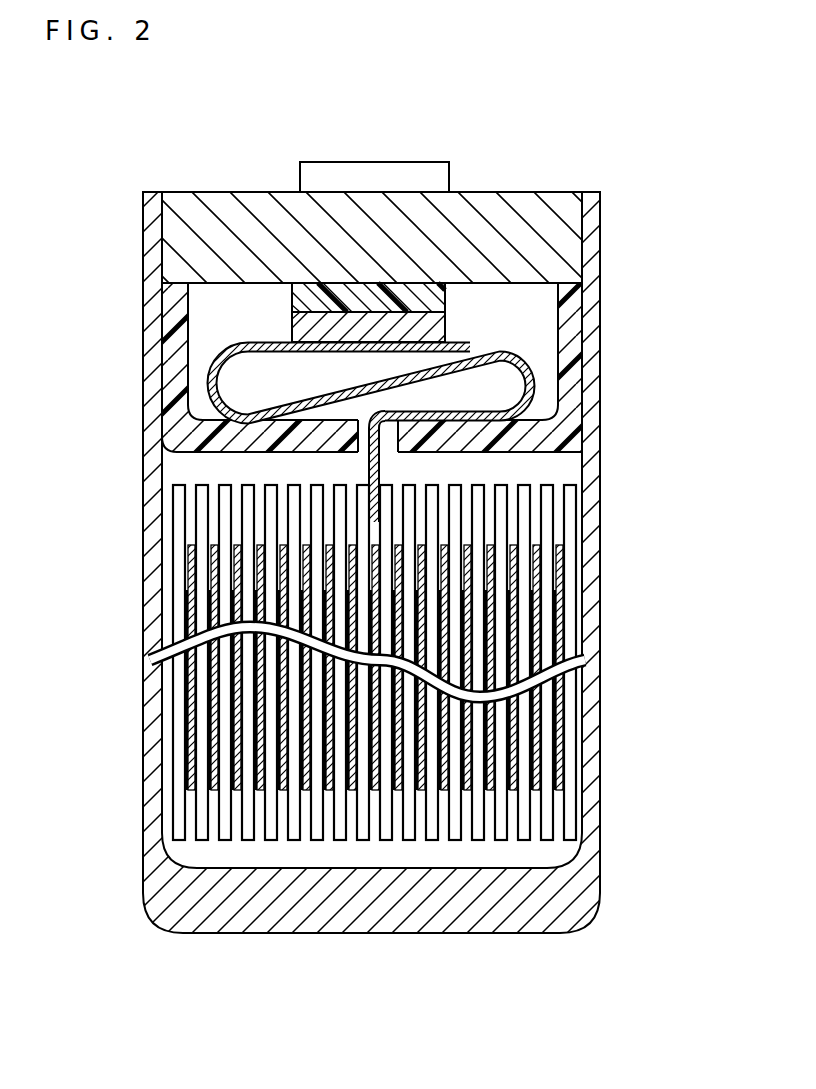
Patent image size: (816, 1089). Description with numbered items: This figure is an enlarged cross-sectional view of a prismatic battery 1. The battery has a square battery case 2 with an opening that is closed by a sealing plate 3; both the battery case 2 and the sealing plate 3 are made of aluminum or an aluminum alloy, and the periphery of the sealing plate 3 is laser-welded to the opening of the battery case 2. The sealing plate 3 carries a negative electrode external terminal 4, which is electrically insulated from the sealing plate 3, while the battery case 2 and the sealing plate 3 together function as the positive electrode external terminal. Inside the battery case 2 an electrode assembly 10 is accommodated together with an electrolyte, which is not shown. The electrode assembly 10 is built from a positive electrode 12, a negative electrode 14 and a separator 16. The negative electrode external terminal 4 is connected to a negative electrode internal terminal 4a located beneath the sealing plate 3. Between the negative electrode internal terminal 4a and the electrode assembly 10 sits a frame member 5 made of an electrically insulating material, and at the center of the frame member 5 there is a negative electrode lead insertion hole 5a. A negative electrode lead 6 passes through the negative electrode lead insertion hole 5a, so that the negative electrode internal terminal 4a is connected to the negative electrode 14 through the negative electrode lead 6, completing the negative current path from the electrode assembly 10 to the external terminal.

The prismatic battery 1 is at (571, 136).
The battery case 2 is at (150, 762).
The sealing plate 3 is at (216, 218).
The negative electrode external terminal 4 is at (383, 167).
The negative electrode internal terminal 4a is at (425, 330).
The frame member 5 is at (568, 376).
The negative electrode lead insertion hole 5a is at (393, 445).
The negative electrode lead 6 is at (217, 380).
The electrode assembly 10 is at (435, 662).
The positive electrode 12 is at (583, 700).
The negative electrode 14 is at (560, 574).
The separator 16 is at (405, 733).